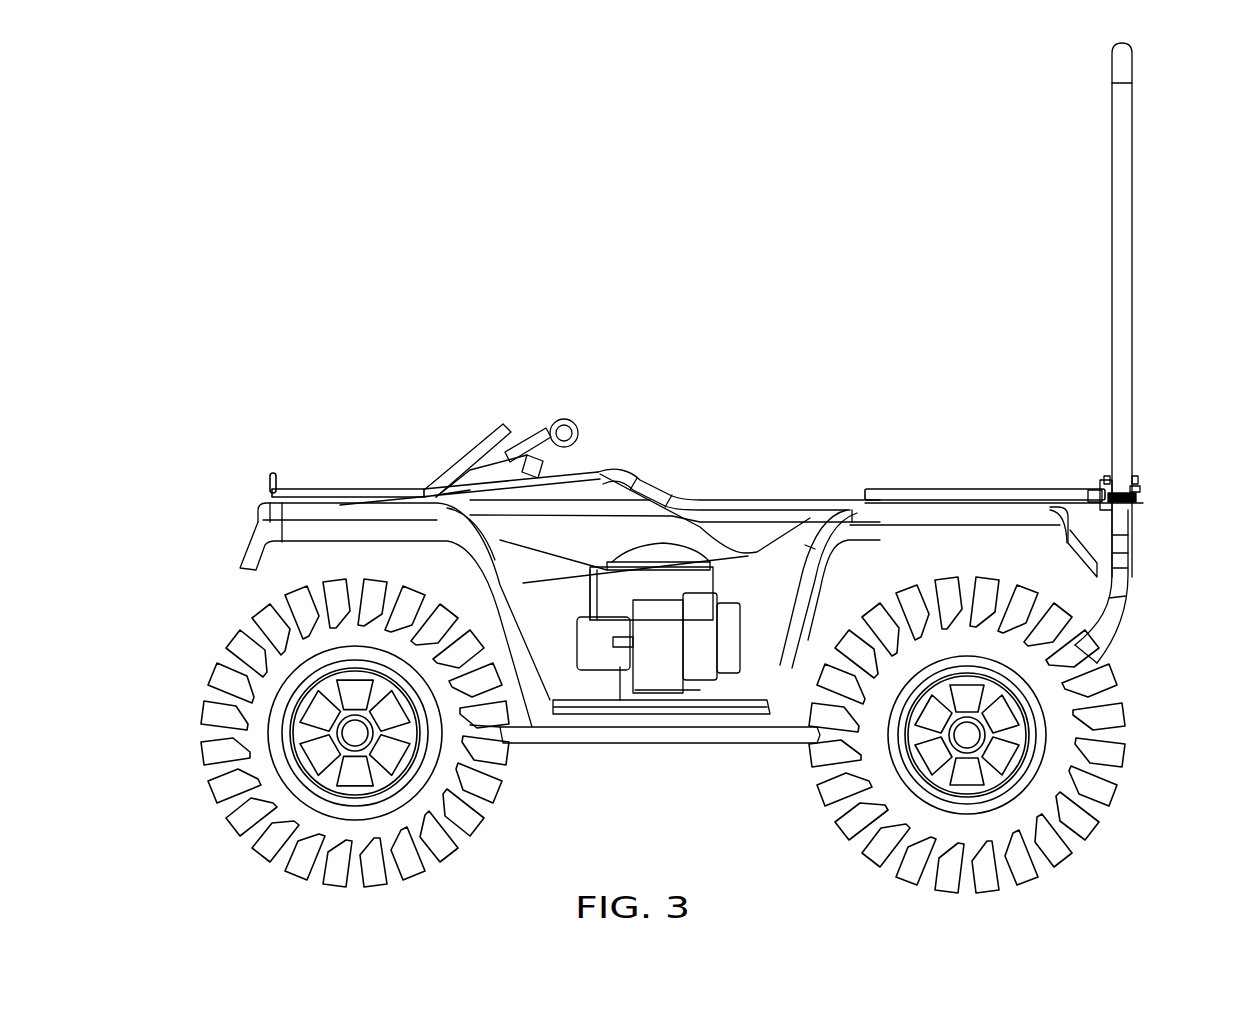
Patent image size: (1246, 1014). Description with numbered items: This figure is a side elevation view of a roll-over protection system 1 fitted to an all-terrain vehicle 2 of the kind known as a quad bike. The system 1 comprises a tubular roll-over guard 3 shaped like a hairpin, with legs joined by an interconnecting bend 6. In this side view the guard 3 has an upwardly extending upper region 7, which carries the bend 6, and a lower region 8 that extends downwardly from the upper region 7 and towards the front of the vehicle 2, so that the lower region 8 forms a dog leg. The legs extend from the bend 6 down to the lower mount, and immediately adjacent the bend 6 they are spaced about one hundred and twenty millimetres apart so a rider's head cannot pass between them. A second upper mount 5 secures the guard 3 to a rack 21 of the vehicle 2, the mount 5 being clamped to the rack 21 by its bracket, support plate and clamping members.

The roll-over protection system 1 is at (1140, 530).
The all-terrain vehicle 2 is at (206, 802).
The roll-over guard 3 is at (1110, 283).
The second upper mount 5 is at (1096, 470).
The bend 6 is at (1112, 50).
The upper region 7 is at (1140, 530).
The lower region 8 is at (1147, 537).
The rack 21 is at (1044, 490).